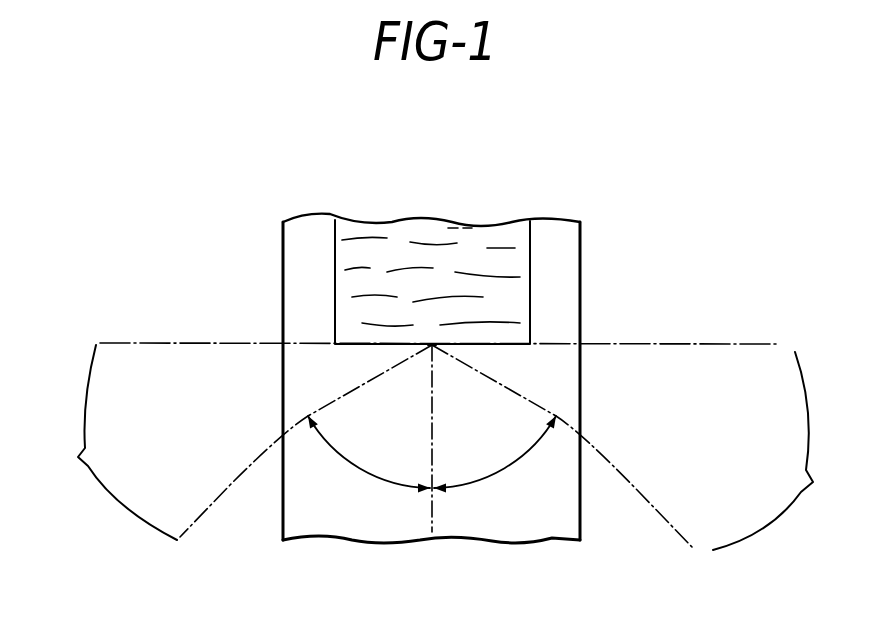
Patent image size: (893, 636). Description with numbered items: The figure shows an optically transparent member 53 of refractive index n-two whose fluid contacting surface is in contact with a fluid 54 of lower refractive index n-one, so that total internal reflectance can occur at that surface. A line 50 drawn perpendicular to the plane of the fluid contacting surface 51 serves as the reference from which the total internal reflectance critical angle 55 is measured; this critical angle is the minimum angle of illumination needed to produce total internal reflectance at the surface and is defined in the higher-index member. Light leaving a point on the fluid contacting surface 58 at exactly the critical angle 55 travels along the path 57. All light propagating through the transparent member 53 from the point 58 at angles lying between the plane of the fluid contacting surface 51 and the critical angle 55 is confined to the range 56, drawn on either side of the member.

The line perpendicular to the plane of the fluid contacting surface 50 is at (432, 506).
The plane of the fluid contacting surface 51 is at (130, 340).
The optically transparent member 53 is at (276, 551).
The fluid 54 is at (495, 228).
The total internal reflectance critical angle 55 is at (432, 454).
The range of light propagation 56 is at (437, 447).
The light path at the critical angle 57 is at (342, 392).
The point on the fluid contacting surface 58 is at (432, 344).